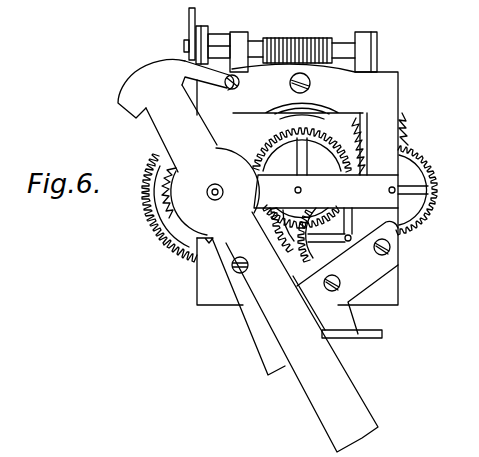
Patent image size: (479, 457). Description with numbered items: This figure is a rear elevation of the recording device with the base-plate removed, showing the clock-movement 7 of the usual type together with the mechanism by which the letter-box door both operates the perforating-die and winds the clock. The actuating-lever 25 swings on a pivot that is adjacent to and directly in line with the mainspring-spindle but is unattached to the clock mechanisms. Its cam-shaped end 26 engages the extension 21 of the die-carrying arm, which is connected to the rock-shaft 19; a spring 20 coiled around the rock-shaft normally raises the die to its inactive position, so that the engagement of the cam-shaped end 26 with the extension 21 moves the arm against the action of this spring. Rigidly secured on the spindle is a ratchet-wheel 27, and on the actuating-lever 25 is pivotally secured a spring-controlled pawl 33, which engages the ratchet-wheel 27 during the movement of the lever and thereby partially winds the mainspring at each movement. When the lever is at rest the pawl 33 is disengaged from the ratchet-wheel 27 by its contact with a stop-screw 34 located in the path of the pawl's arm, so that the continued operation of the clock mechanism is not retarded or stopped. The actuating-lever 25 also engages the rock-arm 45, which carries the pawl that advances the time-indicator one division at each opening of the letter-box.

The clock-movement 7 is at (302, 178).
The rock-shaft 19 is at (253, 47).
The spring 20 is at (303, 42).
The extension 21 is at (188, 31).
The actuating-lever 25 is at (262, 268).
The cam-shaped end 26 is at (178, 88).
The ratchet-wheel 27 is at (180, 225).
The pawl 33 is at (255, 330).
The stop-screw 34 is at (309, 293).
The rock-arm 45 is at (354, 338).